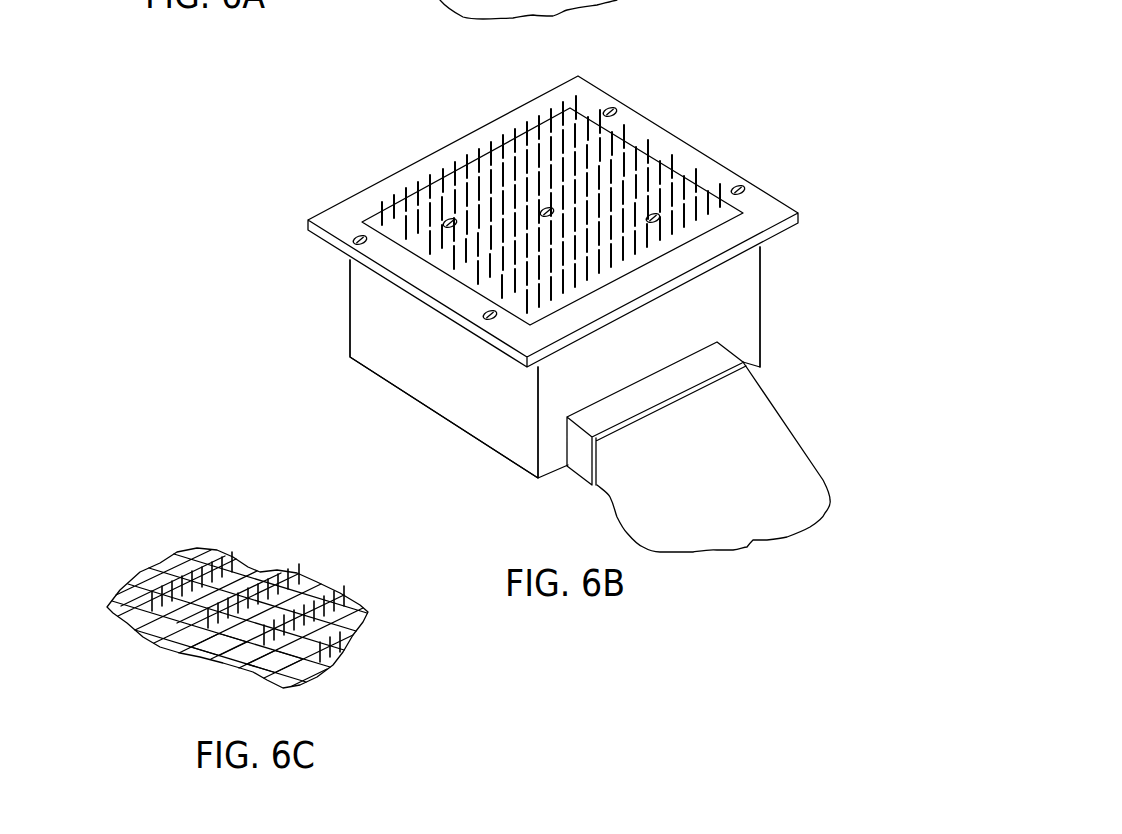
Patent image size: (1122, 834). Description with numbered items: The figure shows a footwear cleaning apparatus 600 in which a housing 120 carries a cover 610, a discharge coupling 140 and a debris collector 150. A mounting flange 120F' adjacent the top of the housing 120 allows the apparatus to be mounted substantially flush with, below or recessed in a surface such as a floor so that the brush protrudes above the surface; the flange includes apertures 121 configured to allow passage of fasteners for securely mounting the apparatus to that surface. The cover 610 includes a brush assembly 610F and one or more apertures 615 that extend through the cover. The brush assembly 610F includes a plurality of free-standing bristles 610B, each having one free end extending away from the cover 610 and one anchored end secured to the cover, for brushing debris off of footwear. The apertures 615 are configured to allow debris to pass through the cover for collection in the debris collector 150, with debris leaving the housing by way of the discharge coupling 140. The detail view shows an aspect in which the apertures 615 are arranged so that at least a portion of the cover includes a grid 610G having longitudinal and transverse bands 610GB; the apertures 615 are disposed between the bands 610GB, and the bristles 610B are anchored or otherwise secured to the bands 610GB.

In FIG. 6B, the footwear cleaning apparatus 600 is at (676, 88).
In FIG. 6B, the brush assembly 610F is at (440, 149).
In FIG. 6B, the apertures 615 is at (654, 215).
In FIG. 6C, the apertures 615 is at (217, 654).
In FIG. 6B, the mounting flange 120F' is at (579, 221).
In FIG. 6B, the apertures 121 is at (352, 243).
In FIG. 6B, the cover 610 is at (484, 287).
In FIG. 6C, the cover 610 is at (379, 584).
In FIG. 6B, the housing 120 is at (748, 280).
In FIG. 6B, the discharge coupling 140 is at (720, 357).
In FIG. 6B, the debris collector 150 is at (637, 523).
In FIG. 6C, the bands 610GB is at (138, 602).
In FIG. 6C, the bristles 610B is at (293, 577).
In FIG. 6C, the grid 610G is at (313, 662).